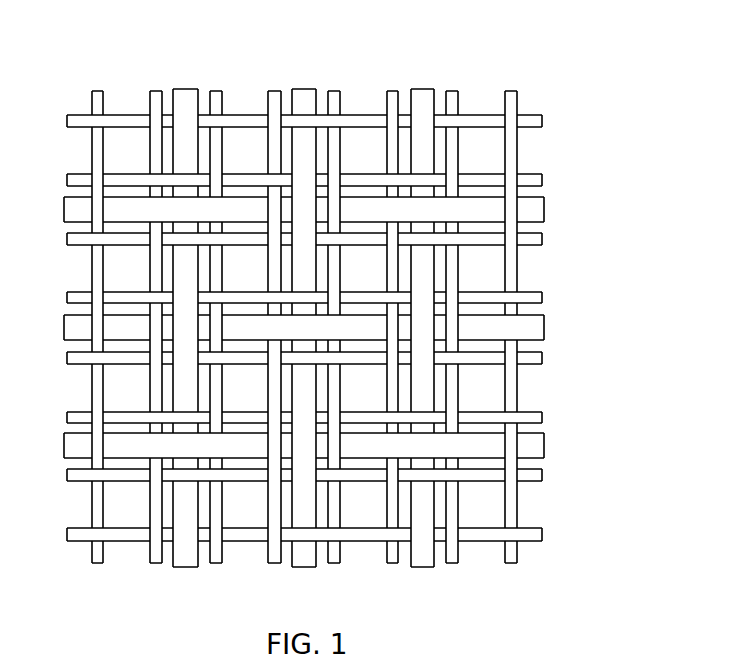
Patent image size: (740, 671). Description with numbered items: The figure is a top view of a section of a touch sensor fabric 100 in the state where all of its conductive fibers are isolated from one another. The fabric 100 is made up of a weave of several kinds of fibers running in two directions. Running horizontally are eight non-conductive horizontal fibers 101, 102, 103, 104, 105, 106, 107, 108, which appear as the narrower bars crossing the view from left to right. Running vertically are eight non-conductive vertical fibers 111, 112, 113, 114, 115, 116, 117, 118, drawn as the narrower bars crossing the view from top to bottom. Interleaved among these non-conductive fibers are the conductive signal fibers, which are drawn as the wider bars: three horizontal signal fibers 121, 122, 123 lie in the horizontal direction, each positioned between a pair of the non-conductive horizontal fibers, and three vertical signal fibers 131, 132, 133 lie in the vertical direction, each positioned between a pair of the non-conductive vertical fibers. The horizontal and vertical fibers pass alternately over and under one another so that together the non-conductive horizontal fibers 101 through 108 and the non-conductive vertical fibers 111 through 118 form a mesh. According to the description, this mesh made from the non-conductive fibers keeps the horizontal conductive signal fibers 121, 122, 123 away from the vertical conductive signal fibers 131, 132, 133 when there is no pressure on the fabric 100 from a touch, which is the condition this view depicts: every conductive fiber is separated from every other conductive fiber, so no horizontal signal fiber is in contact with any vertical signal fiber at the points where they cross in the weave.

The fabric 100 is at (350, 298).
The non-conductive horizontal fiber 101 is at (545, 121).
The non-conductive horizontal fiber 102 is at (545, 180).
The non-conductive horizontal fiber 103 is at (545, 239).
The non-conductive horizontal fiber 104 is at (545, 297).
The non-conductive horizontal fiber 105 is at (545, 358).
The non-conductive horizontal fiber 106 is at (545, 417).
The non-conductive horizontal fiber 107 is at (545, 475).
The non-conductive horizontal fiber 108 is at (545, 534).
The non-conductive vertical fiber 111 is at (512, 91).
The non-conductive vertical fiber 112 is at (452, 91).
The non-conductive vertical fiber 113 is at (394, 91).
The non-conductive vertical fiber 114 is at (335, 91).
The non-conductive vertical fiber 115 is at (276, 91).
The non-conductive vertical fiber 116 is at (216, 91).
The non-conductive vertical fiber 117 is at (157, 91).
The non-conductive vertical fiber 118 is at (98, 91).
The horizontal signal fiber 121 is at (545, 209).
The horizontal signal fiber 122 is at (545, 327).
The horizontal signal fiber 123 is at (545, 445).
The vertical signal fiber 131 is at (424, 89).
The vertical signal fiber 132 is at (305, 89).
The vertical signal fiber 133 is at (188, 89).